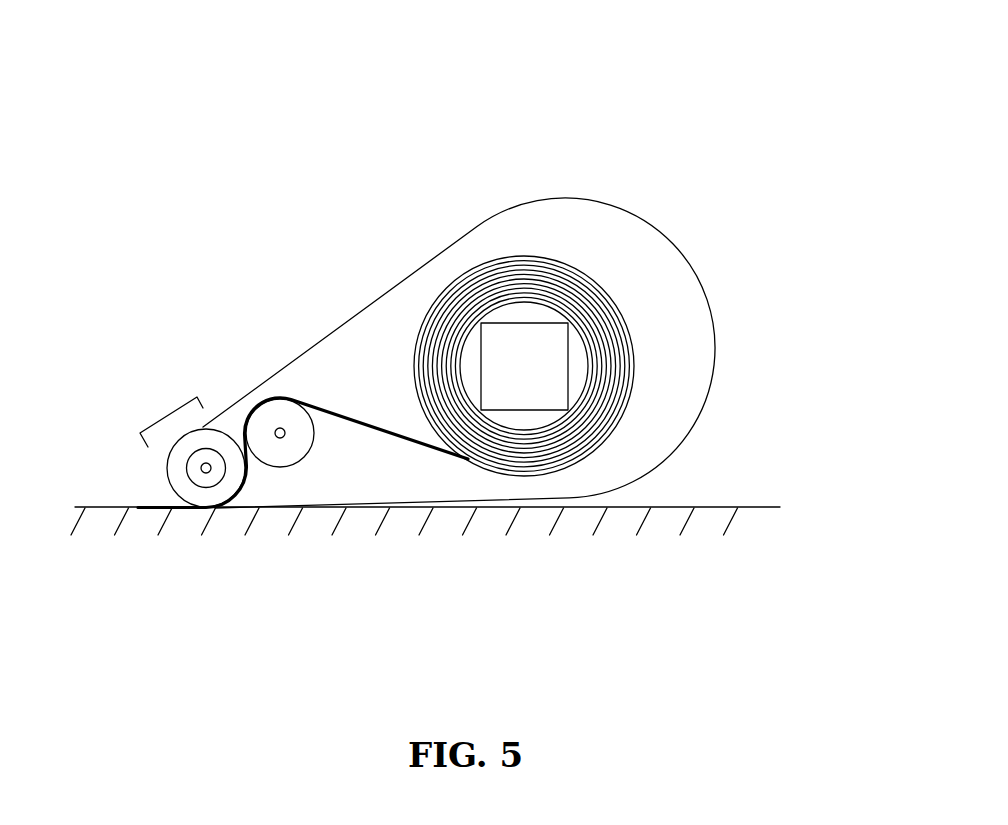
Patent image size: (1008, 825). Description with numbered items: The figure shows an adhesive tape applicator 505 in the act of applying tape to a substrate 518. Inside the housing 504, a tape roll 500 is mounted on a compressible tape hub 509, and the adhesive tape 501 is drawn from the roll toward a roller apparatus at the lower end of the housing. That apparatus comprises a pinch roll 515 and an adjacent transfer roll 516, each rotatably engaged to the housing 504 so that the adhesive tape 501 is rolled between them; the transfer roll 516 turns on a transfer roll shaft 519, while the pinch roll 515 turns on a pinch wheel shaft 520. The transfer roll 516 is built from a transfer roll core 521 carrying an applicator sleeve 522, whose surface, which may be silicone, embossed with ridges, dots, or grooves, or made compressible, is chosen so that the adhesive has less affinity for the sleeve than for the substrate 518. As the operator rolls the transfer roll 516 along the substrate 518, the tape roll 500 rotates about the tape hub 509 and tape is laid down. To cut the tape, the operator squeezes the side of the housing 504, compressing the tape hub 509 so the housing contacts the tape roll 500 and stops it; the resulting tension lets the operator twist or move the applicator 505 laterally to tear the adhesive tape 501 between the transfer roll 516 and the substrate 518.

The applicator 505 is at (573, 52).
The housing 504 is at (459, 303).
The tape roll 500 is at (598, 366).
The compressible tape hub 509 is at (605, 298).
The adhesive tape 501 is at (303, 349).
The pinch roll 515 is at (287, 376).
The pinch wheel shaft 520 is at (282, 440).
The applicator sleeve 522 is at (183, 482).
The transfer roll core 521 is at (203, 480).
The transfer roll shaft 519 is at (208, 475).
The transfer roll 516 is at (146, 395).
The substrate 518 is at (410, 482).